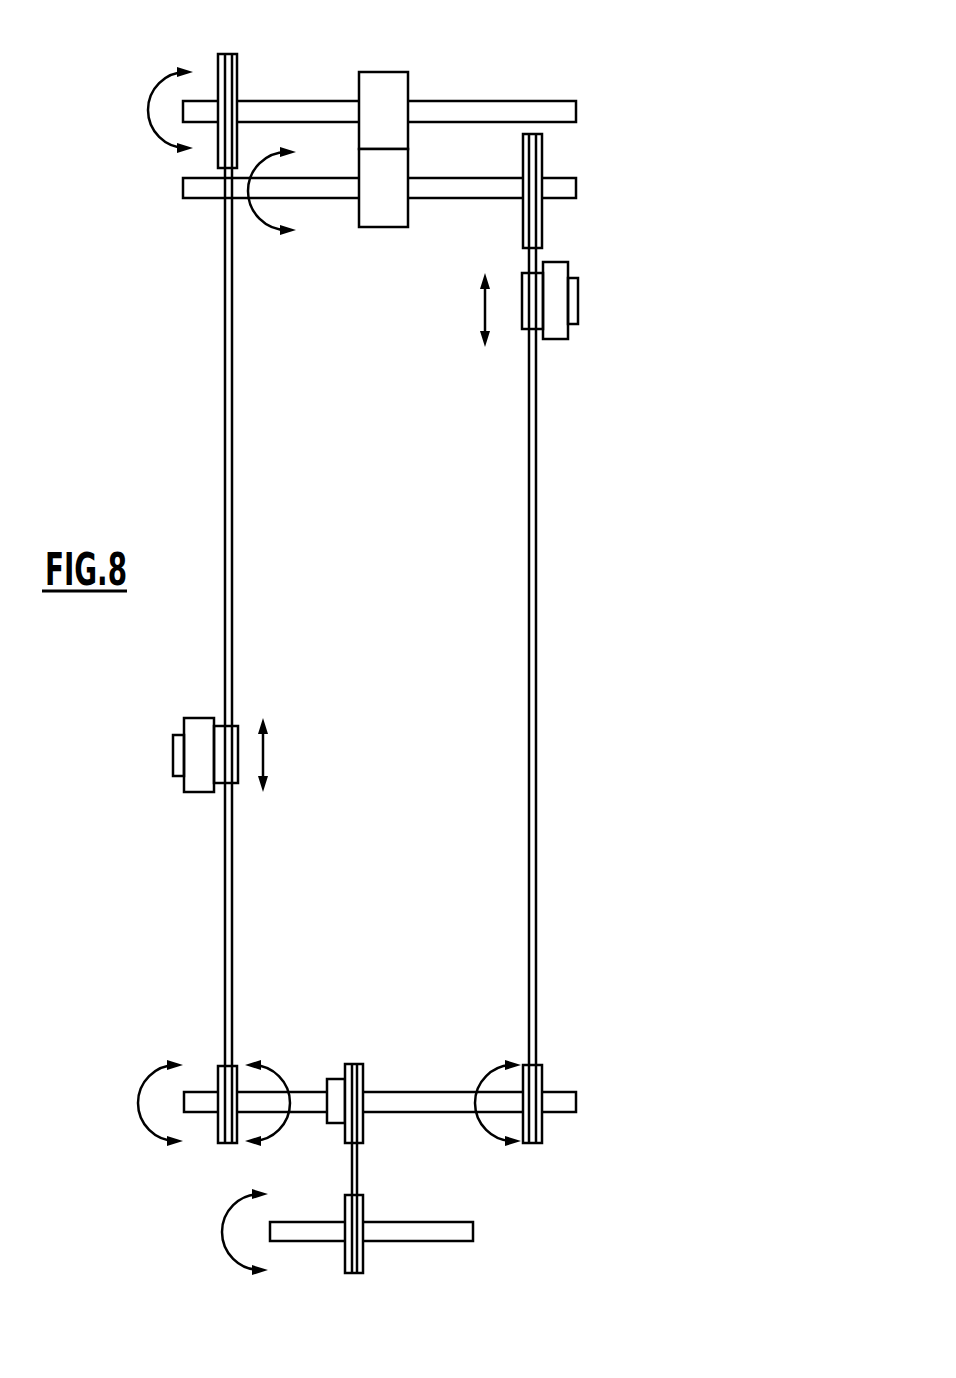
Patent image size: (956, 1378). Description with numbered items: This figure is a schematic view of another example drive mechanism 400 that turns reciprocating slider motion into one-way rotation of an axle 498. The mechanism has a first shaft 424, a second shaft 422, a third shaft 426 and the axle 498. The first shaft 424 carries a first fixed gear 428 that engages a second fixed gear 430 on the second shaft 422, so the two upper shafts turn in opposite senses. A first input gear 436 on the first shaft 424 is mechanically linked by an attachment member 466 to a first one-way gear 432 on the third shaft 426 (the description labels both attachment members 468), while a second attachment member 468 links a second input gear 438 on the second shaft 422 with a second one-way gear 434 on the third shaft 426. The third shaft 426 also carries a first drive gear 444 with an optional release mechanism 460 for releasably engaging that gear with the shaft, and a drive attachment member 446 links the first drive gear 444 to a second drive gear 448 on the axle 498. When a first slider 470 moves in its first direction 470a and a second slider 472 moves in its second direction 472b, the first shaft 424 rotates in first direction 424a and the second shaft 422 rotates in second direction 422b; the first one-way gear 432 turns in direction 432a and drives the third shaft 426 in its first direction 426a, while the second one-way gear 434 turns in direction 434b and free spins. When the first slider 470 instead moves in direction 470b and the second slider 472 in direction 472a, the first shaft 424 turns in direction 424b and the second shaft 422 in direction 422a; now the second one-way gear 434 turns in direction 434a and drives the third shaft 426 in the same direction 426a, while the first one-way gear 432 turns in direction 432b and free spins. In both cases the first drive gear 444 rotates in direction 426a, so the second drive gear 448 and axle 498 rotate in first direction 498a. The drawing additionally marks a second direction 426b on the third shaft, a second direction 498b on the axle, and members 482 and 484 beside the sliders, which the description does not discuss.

The drive mechanism 400 is at (659, 56).
The second shaft 422 is at (270, 101).
The first direction of second shaft 422a is at (152, 76).
The second direction of second shaft 422b is at (152, 143).
The first shaft 424 is at (577, 186).
The first direction of first shaft 424a is at (298, 164).
The second direction of first shaft 424b is at (298, 217).
The third shaft 426 is at (577, 1100).
The first direction of third shaft 426a is at (147, 1065).
The second rotation direction of third shaft 426b is at (154, 1141).
The first fixed gear 428 is at (383, 227).
The second fixed gear 430 is at (408, 72).
The first one-way gear 432 is at (542, 1072).
The first direction of first one-way gear 432a is at (484, 1065).
The second direction of first one-way gear 432b is at (491, 1141).
The second one-way gear 434 is at (218, 1066).
The first direction of second one-way gear 434a is at (277, 1065).
The second direction of second one-way gear 434b is at (276, 1141).
The first input gear 436 is at (543, 157).
The second input gear 438 is at (237, 56).
The first drive gear 444 is at (355, 1064).
The drive attachment member 446 is at (357, 1163).
The second drive gear 448 is at (350, 1273).
The release mechanism 460 is at (336, 1079).
The belt 466 is at (537, 486).
The attachment member 468 is at (224, 465).
The first slider 470 is at (558, 339).
The first direction of first slider 470a is at (487, 275).
The second direction of first slider 470b is at (487, 344).
The second slider 472 is at (184, 718).
The first direction of second slider 472a is at (263, 721).
The second direction of second slider 472b is at (263, 790).
The tensioner actuator 482 is at (578, 283).
The tensioner actuator 484 is at (173, 758).
The axle 498 is at (447, 1241).
The first direction of axle 498a is at (272, 1207).
The second rotation direction of fourth shaft 498b is at (272, 1256).